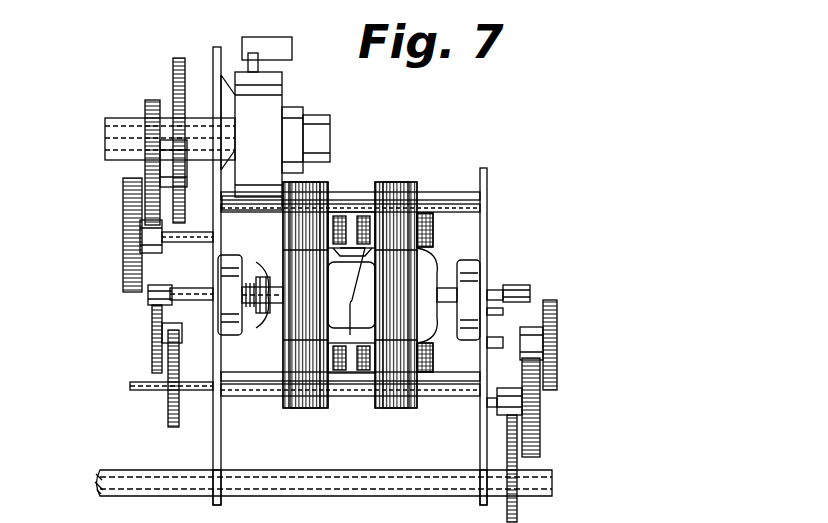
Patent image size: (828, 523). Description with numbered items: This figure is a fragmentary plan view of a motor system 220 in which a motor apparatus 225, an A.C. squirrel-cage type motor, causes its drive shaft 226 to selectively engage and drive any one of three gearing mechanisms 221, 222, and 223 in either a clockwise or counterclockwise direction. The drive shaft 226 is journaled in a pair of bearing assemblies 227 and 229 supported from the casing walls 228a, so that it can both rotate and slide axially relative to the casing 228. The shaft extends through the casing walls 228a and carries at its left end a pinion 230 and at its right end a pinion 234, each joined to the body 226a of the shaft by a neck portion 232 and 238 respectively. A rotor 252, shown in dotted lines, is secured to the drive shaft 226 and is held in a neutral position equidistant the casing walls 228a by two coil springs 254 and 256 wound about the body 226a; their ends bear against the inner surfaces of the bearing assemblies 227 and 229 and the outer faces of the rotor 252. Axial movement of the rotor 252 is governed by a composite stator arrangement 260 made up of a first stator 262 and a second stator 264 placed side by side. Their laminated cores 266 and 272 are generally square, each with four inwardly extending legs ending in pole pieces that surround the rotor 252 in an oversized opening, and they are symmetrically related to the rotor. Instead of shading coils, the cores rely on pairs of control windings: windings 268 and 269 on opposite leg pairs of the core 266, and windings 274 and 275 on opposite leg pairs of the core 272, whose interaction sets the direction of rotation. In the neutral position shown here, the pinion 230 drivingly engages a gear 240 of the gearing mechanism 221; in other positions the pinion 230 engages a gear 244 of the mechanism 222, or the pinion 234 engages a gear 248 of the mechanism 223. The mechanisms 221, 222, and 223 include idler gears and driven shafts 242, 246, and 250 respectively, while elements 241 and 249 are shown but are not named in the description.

The motor system 220 is at (442, 135).
The gearing mechanism 221 is at (115, 358).
The gearing mechanism 222 is at (122, 205).
The gearing mechanism 223 is at (590, 366).
The motor apparatus 225 is at (565, 245).
The drive shaft 226 is at (221, 312).
The body of the drive shaft 226a is at (487, 318).
The bearing assembly 227 is at (228, 262).
The casing 228 is at (210, 447).
The casing walls 228a is at (213, 500).
The bearing assembly 229 is at (478, 262).
The pinion 230 is at (148, 295).
The neck portion 232 is at (188, 290).
The pinion 234 is at (525, 284).
The neck portion 238 is at (495, 290).
The gear 240 is at (152, 327).
The gear 241 is at (168, 412).
The driven shaft 242 is at (140, 388).
The gear 244 is at (128, 246).
The driven shaft 246 is at (125, 122).
The gear 248 is at (557, 307).
The gear 249 is at (543, 410).
The driven shaft 250 is at (288, 496).
The rotor 252 is at (372, 205).
The coil spring 254 is at (262, 328).
The coil spring 256 is at (448, 340).
The composite stator arrangement 260 is at (340, 413).
The first stator 262 is at (284, 410).
The second stator 264 is at (397, 410).
The laminated core 266 is at (308, 408).
The control windings 268 is at (263, 277).
The control windings 269 is at (338, 212).
The laminated core 272 is at (405, 410).
The control windings 274 is at (455, 246).
The control windings 275 is at (428, 210).